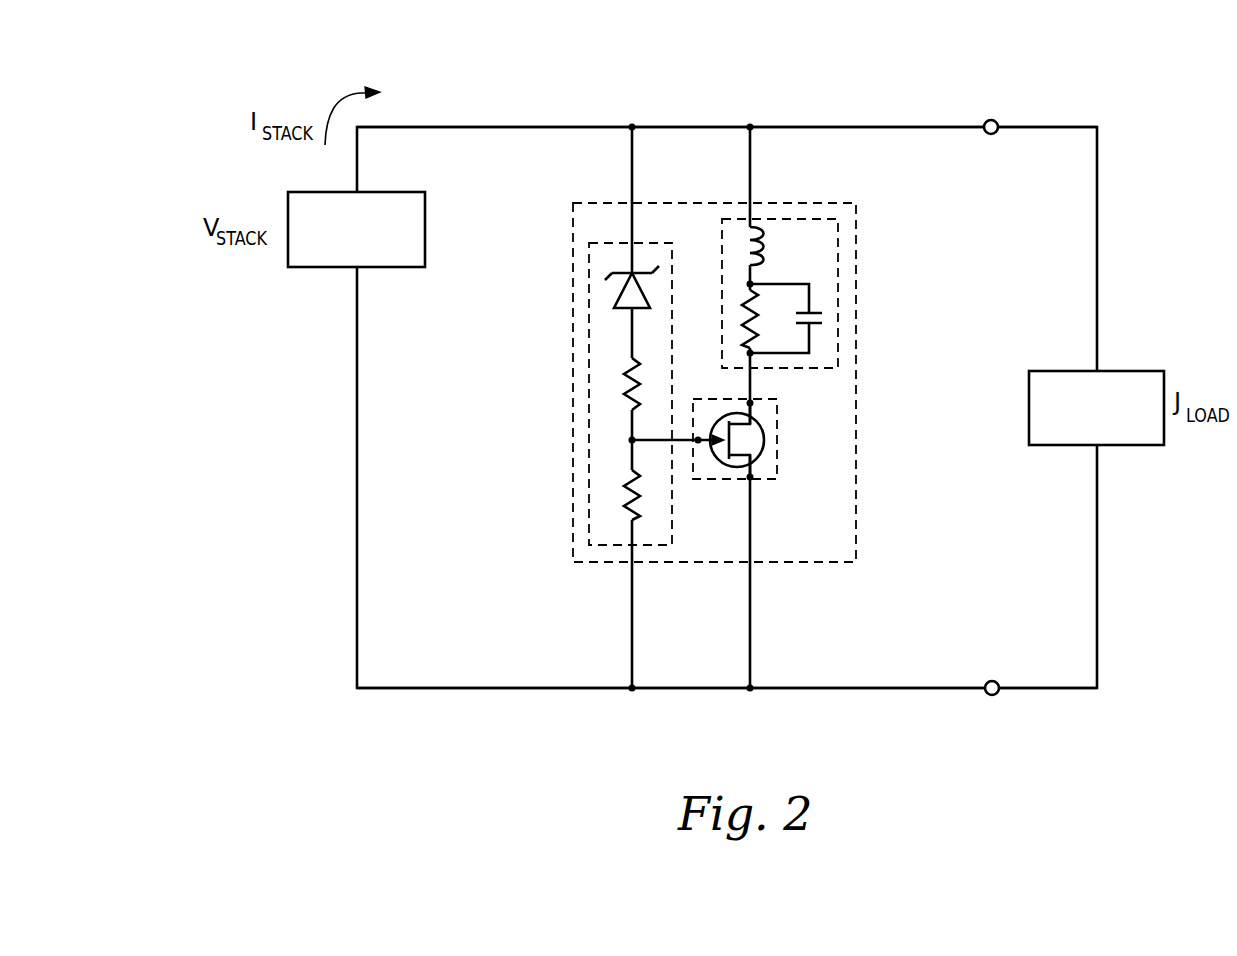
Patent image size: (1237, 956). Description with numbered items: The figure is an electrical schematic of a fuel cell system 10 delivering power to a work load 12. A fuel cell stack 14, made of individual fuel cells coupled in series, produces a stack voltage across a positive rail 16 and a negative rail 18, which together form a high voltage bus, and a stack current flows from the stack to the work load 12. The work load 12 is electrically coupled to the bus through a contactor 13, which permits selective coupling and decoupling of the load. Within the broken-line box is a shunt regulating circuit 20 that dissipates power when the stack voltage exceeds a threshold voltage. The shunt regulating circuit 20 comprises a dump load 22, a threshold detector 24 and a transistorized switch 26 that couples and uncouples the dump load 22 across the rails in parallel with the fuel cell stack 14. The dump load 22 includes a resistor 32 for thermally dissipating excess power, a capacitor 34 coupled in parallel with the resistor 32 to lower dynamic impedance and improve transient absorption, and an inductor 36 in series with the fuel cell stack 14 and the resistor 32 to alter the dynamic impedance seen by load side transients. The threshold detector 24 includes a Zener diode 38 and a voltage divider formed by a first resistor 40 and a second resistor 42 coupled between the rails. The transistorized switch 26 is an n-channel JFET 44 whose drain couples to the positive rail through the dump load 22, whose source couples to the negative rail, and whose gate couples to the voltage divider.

The fuel cell system 10 is at (653, 449).
The work load 12 is at (1064, 408).
The contactor 13 is at (1014, 407).
The fuel cell stack 14 is at (360, 259).
The positive rail 16 is at (727, 96).
The negative rail 18 is at (727, 715).
The shunt regulating circuit 20 is at (681, 387).
The dump load 22 is at (806, 293).
The threshold detector 24 is at (597, 391).
The transistorized switch 26 is at (759, 440).
The resistor 32 is at (722, 311).
The capacitor 34 is at (786, 318).
The inductor 36 is at (781, 250).
The Zener diode 38 is at (597, 296).
The first resistor 40 is at (588, 375).
The second resistor 42 is at (588, 483).
The n-channel JFET 44 is at (766, 440).